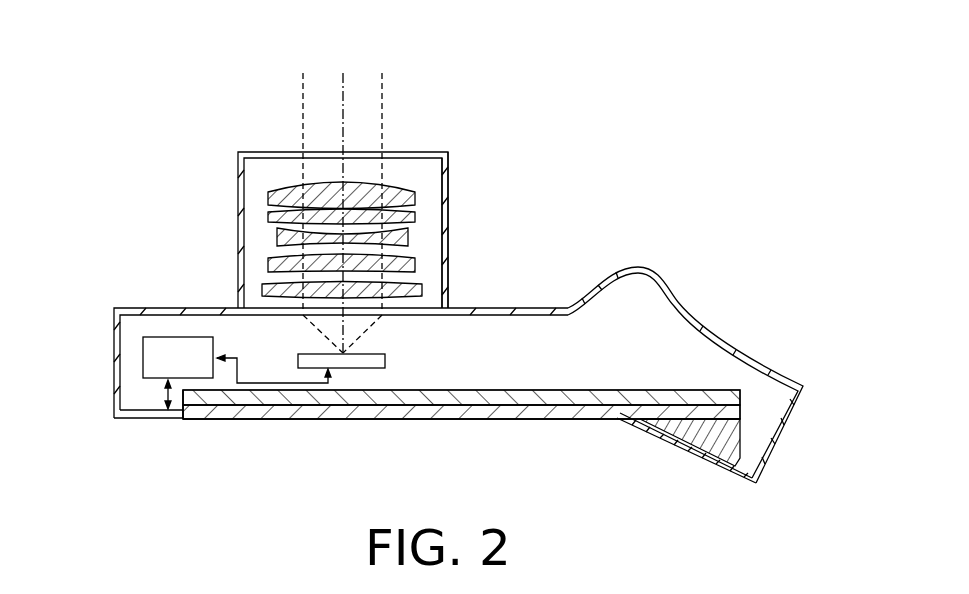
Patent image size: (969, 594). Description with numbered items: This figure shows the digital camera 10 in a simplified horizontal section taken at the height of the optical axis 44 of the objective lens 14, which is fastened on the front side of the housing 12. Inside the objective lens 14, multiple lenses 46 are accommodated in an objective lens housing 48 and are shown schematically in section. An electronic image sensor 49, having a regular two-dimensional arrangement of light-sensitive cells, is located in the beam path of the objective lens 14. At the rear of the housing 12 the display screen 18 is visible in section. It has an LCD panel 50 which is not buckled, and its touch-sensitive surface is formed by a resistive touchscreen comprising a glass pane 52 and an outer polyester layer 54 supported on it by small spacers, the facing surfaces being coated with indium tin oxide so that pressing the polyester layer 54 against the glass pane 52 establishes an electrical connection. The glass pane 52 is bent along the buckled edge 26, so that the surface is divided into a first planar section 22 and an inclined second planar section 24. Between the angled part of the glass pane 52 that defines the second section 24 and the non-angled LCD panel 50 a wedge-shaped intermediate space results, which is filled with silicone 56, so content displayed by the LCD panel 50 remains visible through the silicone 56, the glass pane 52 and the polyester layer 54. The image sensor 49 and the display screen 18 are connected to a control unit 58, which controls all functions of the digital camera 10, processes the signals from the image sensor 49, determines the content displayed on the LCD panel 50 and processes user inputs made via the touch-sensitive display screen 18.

The digital camera 10 is at (116, 450).
The housing 12 is at (788, 426).
The objective lens 14 is at (458, 161).
The display screen 18 is at (460, 426).
The first planar section 22 is at (542, 426).
The second planar section 24 is at (680, 468).
The buckled edge 26 is at (615, 421).
The optical axis 44 is at (343, 100).
The lenses 46 is at (417, 267).
The objective lens housing 48 is at (448, 190).
The electronic image sensor 49 is at (365, 370).
The LCD panel 50 is at (275, 421).
The glass pane 52 is at (218, 420).
The outer polyester layer 54 is at (195, 419).
The silicone 56 is at (738, 445).
The control unit 58 is at (143, 352).